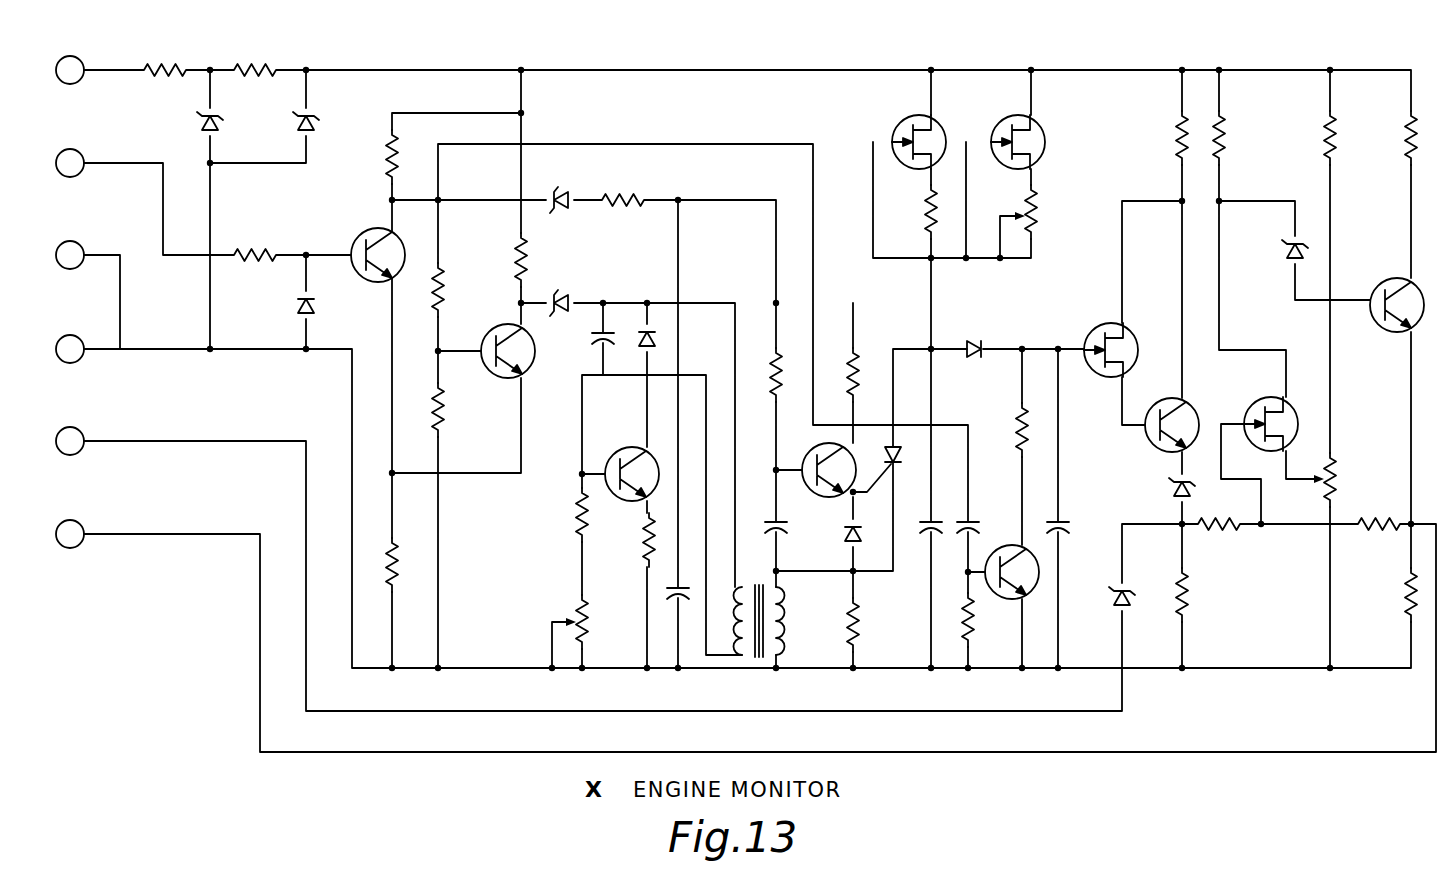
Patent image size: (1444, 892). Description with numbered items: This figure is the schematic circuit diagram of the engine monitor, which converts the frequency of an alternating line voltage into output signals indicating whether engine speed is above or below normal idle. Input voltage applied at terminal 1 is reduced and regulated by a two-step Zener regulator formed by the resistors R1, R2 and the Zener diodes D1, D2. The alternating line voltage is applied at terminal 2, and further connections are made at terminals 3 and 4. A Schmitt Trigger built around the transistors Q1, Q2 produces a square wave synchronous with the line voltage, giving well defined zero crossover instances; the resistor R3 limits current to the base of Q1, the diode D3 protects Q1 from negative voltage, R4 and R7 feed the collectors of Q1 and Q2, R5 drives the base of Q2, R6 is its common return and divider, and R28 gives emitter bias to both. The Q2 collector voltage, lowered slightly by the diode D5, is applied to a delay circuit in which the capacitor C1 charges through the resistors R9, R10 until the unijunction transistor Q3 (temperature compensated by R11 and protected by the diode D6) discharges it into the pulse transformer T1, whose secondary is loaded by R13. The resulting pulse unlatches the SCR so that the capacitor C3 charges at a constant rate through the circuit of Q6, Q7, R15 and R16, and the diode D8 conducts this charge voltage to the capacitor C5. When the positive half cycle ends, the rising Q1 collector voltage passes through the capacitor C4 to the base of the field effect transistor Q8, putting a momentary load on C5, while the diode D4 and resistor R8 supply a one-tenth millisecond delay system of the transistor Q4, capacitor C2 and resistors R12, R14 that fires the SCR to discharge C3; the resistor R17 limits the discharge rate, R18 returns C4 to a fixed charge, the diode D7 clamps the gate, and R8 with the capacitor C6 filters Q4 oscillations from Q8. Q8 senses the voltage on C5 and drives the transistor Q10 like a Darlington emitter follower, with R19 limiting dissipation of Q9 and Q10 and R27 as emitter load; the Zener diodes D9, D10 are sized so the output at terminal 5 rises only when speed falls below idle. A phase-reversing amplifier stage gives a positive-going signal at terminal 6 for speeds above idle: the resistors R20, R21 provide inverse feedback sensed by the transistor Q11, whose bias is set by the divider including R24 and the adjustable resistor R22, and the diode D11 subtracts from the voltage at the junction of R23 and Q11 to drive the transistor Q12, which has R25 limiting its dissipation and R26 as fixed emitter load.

The terminal 1 is at (70, 70).
The terminal 2 is at (70, 163).
The terminal 3 is at (70, 255).
The terminal 4 is at (70, 349).
The terminal 5 is at (70, 441).
The terminal 6 is at (70, 534).
The resistor R1 is at (164, 84).
The resistor R2 is at (254, 84).
The resistor R3 is at (254, 244).
The resistor R4 is at (373, 157).
The resistor R5 is at (453, 290).
The resistor R6 is at (453, 410).
The resistor R7 is at (504, 260).
The resistor R8 is at (622, 188).
The resistor R9 is at (565, 515).
The resistor R10 is at (598, 622).
The resistor R11 is at (629, 540).
The resistor R12 is at (770, 362).
The resistor R13 is at (874, 625).
The resistor R14 is at (858, 383).
The resistor R15 is at (912, 212).
The resistor R16 is at (1047, 212).
The resistor R17 is at (1002, 430).
The resistor R18 is at (989, 620).
The resistor R19 is at (1160, 138).
The resistor R20 is at (1218, 537).
The resistor R21 is at (1376, 537).
The adjustable resistor R22 is at (1347, 480).
The resistor R23 is at (1240, 138).
The resistor R24 is at (1304, 138).
The resistor R25 is at (1385, 138).
The resistor R26 is at (1387, 595).
The resistor R27 is at (1204, 595).
The resistor R28 is at (399, 562).
The Zener diode D1 is at (197, 125).
The Zener diode D2 is at (290, 125).
The diode D3 is at (288, 306).
The diode D4 is at (567, 210).
The diode D5 is at (739, 381).
The diode D6 is at (635, 353).
The diode D7 is at (839, 546).
The diode D8 is at (976, 337).
The Zener diode D9 is at (1167, 491).
The Zener diode D10 is at (1106, 609).
The diode D11 is at (1276, 254).
The transistor Q1 is at (370, 246).
The transistor Q2 is at (491, 352).
The unijunction transistor Q3 is at (628, 464).
The transistor Q4 is at (819, 463).
The transistor device Q6 is at (909, 132).
The transistor device Q7 is at (1013, 132).
The field effect transistor Q8 is at (1012, 584).
The transistor device Q9 is at (1100, 344).
The transistor Q10 is at (1167, 412).
The transistor Q11 is at (1262, 411).
The transistor Q12 is at (1384, 293).
The capacitor C1 is at (591, 339).
The capacitor C2 is at (792, 526).
The capacitor C3 is at (920, 539).
The capacitor C4 is at (979, 516).
The capacitor C5 is at (1069, 516).
The capacitor C6 is at (674, 600).
The pulse transformer T1 is at (774, 621).